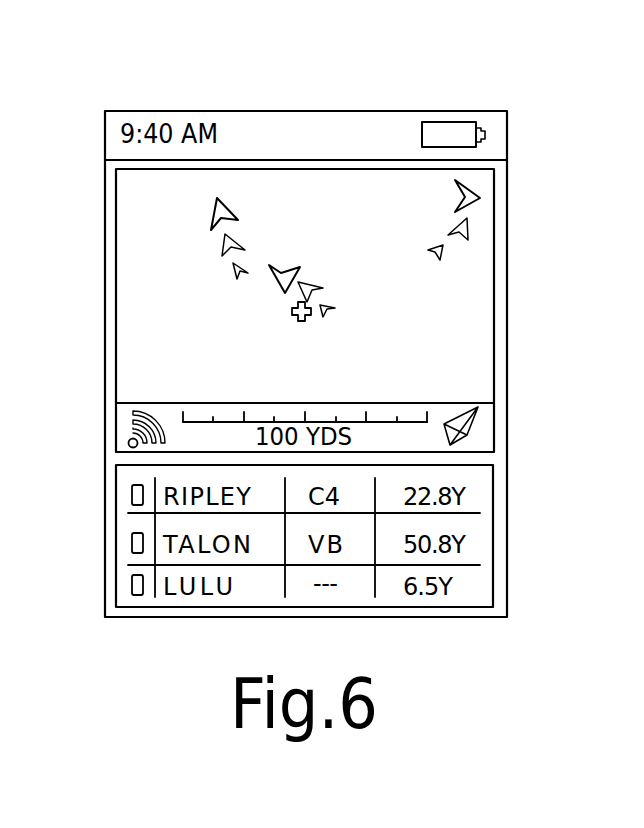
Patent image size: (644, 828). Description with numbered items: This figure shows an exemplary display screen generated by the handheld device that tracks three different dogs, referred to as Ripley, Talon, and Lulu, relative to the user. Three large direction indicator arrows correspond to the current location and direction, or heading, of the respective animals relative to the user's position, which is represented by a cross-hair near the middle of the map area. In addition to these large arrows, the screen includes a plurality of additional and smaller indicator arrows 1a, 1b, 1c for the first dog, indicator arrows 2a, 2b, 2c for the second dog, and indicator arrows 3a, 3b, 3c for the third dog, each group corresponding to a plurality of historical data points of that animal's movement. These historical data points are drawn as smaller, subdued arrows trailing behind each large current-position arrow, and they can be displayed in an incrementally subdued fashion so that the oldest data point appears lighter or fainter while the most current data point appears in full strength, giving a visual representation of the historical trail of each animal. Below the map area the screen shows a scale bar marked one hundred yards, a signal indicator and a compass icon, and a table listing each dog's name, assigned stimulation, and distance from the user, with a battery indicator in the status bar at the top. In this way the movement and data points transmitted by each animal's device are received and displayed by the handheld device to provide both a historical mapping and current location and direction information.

The indicator arrow 1a is at (212, 229).
The indicator arrow 1b is at (226, 237).
The indicator arrow 1c is at (236, 270).
The indicator arrow 2a is at (478, 190).
The indicator arrow 2b is at (467, 232).
The indicator arrow 2c is at (445, 248).
The indicator arrow 3a is at (283, 264).
The indicator arrow 3b is at (325, 284).
The indicator arrow 3c is at (336, 305).